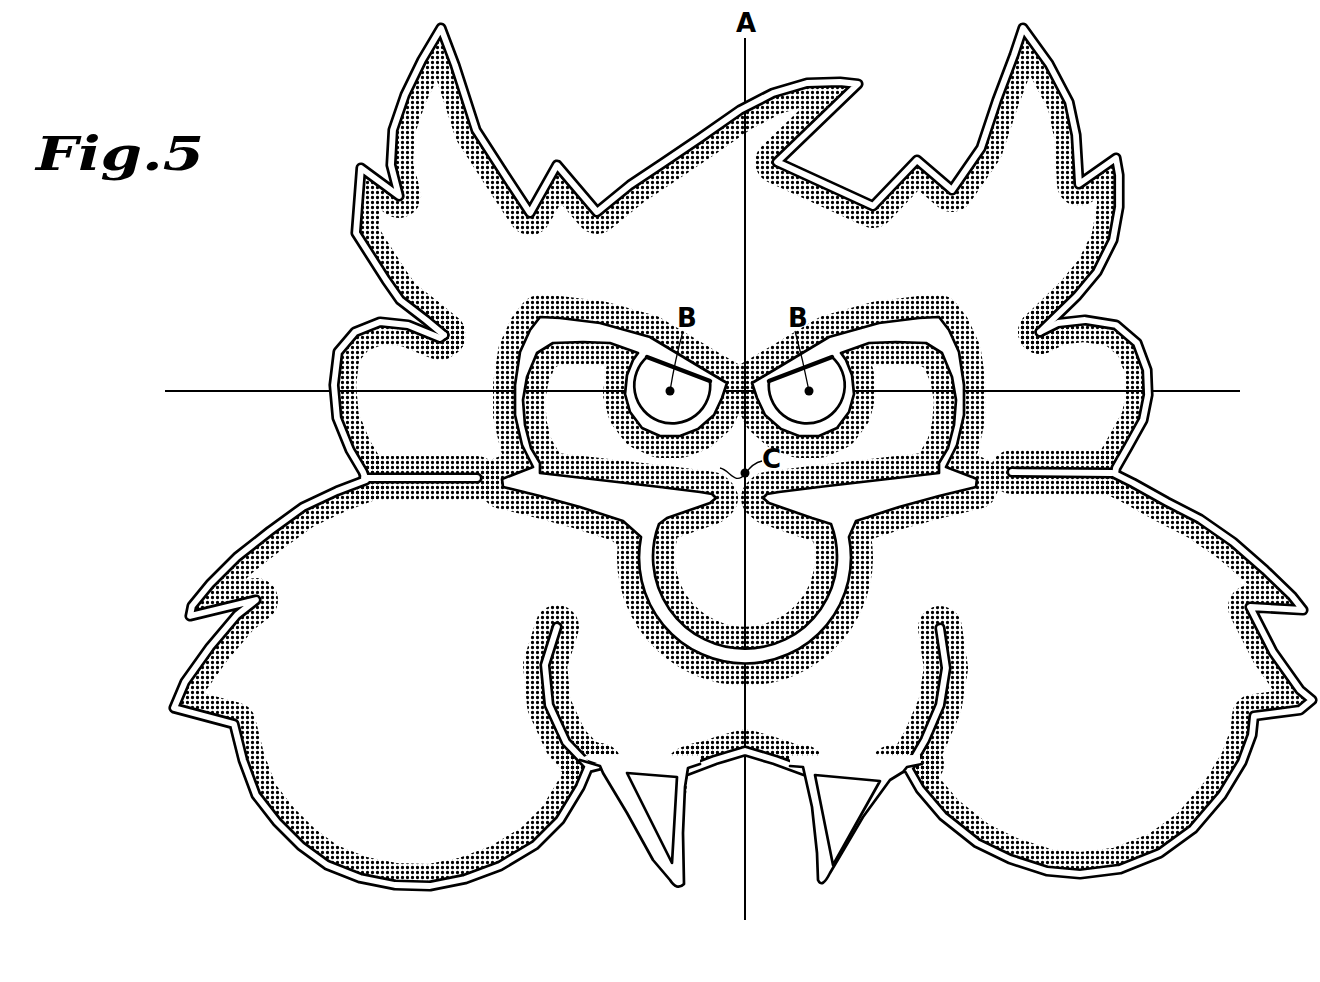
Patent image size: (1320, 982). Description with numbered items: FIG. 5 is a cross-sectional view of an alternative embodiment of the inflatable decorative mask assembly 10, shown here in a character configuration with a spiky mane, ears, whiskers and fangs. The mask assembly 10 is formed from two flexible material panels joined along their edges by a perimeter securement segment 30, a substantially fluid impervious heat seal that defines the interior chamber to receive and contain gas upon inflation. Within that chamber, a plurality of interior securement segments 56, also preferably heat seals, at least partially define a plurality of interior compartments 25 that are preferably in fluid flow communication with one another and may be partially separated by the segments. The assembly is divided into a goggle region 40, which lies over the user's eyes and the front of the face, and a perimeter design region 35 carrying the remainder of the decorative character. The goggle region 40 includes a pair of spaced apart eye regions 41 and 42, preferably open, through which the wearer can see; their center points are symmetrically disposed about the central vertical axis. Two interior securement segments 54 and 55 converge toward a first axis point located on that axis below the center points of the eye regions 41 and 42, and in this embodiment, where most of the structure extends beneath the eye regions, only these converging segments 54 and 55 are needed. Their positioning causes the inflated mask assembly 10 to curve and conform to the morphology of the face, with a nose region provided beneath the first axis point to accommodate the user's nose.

The inflatable decorative mask assembly 10 is at (1180, 92).
The interior compartments 25 is at (493, 438).
The perimeter securement segment 30 is at (483, 135).
The perimeter design region 35 is at (342, 548).
The goggle region 40 is at (914, 376).
The eye region 41 is at (812, 407).
The eye region 42 is at (663, 413).
The interior securement segment 54 is at (690, 512).
The interior securement segment 55 is at (802, 512).
The interior securement segment 56 is at (582, 333).